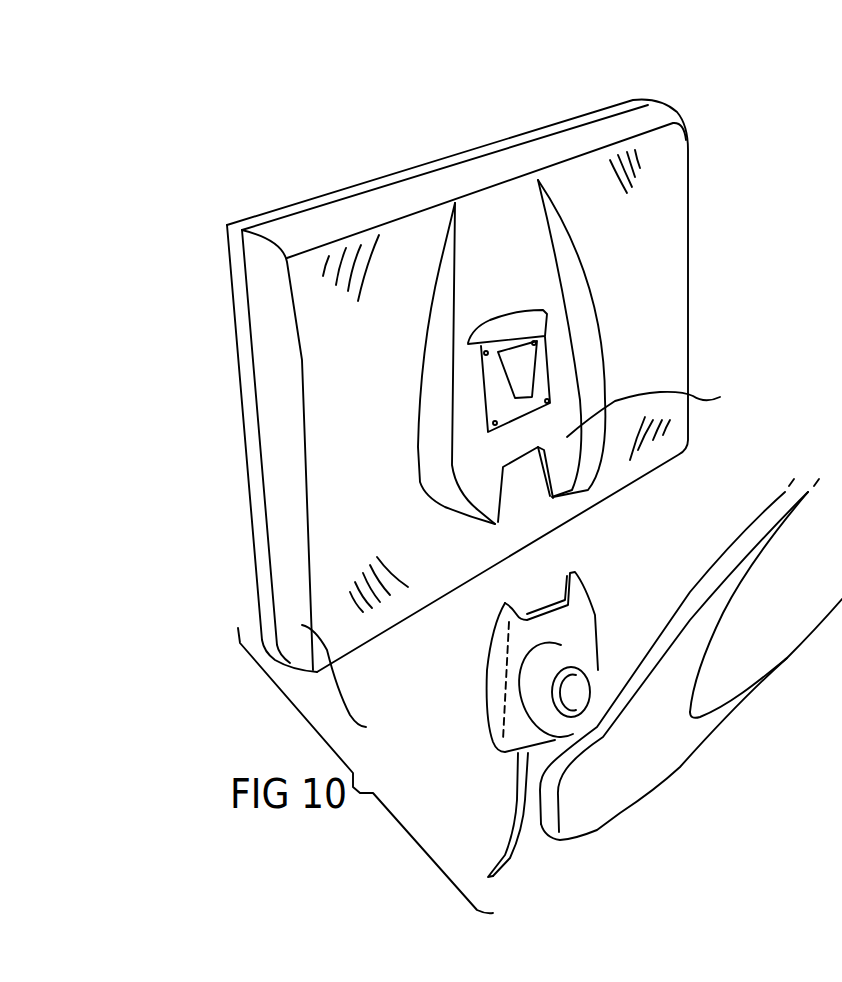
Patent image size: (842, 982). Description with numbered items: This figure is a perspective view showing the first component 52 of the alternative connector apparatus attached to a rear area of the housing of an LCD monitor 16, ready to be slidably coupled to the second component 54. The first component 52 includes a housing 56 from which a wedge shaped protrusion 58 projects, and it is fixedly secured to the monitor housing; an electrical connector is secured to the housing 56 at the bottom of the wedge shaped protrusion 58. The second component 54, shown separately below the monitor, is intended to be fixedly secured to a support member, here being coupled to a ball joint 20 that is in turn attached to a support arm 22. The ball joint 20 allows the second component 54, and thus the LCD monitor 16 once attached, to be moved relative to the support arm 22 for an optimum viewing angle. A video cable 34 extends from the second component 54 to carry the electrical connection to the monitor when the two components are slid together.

The LCD monitor 16 is at (231, 263).
The first component 52 is at (546, 314).
The wedge shaped protrusion 58 is at (527, 366).
The housing 56 is at (462, 397).
The second component 54 is at (583, 616).
The ball joint 20 is at (570, 700).
The support arm 22 is at (632, 778).
The video cable 34 is at (513, 843).